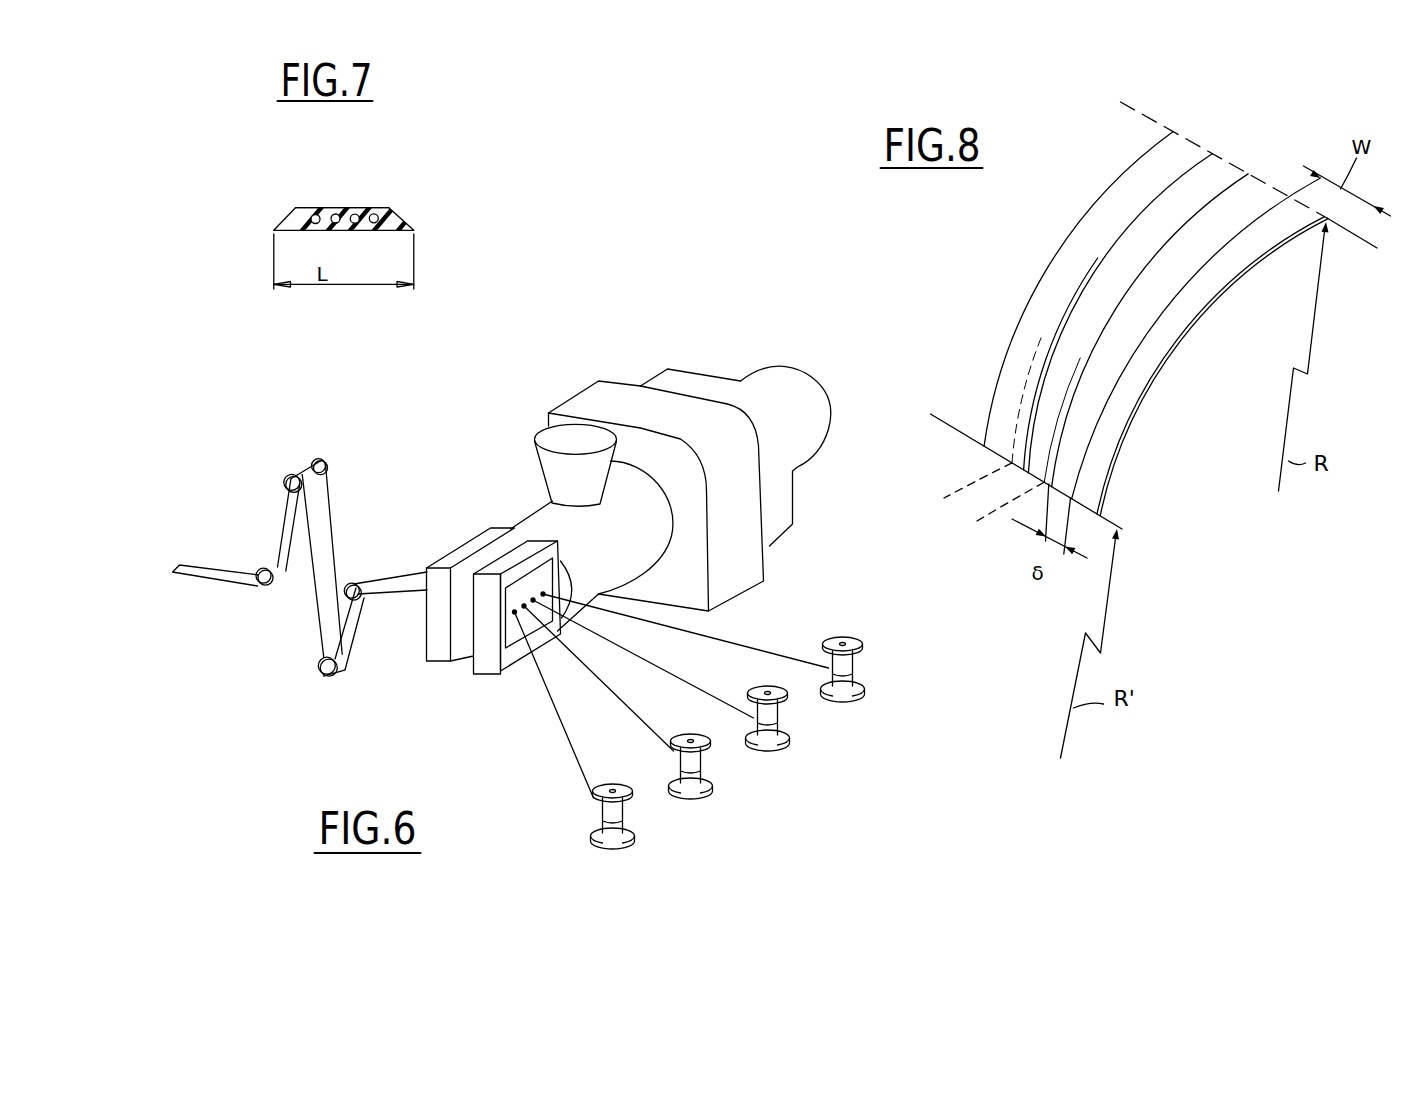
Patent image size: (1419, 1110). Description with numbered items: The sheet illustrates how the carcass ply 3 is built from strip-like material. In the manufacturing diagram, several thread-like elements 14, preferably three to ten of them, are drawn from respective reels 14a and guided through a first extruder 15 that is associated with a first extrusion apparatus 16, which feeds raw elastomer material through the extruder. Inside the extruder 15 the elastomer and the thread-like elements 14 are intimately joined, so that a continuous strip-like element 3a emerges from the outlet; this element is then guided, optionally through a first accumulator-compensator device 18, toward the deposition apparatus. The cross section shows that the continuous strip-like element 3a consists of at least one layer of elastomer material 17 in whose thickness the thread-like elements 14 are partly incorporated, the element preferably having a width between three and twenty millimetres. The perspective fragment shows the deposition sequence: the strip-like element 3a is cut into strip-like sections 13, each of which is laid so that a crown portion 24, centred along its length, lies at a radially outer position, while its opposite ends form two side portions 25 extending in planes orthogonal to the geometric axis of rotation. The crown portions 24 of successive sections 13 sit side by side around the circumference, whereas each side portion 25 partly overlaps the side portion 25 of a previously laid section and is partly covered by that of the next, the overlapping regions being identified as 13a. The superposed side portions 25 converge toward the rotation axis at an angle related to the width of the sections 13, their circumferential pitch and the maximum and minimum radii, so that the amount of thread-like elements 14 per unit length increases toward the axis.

In FIG. 8, the carcass ply 3 is at (1203, 338).
In FIG. 7, the continuous strip-like element 3a is at (329, 207).
In FIG. 6, the continuous strip-like element 3a is at (210, 560).
In FIG. 8, the strip-like sections 13 is at (1188, 140).
In FIG. 8, the overlapping regions 13a is at (979, 506).
In FIG. 7, the thread-like elements 14 is at (310, 210).
In FIG. 6, the thread-like elements 14 is at (618, 707).
In FIG. 6, the reels 14a is at (625, 843).
In FIG. 6, the first extruder 15 is at (476, 545).
In FIG. 6, the first extrusion apparatus 16 is at (625, 380).
In FIG. 7, the layer of elastomer material 17 is at (393, 212).
In FIG. 6, the first accumulator-compensator device 18 is at (346, 540).
In FIG. 8, the crown portion 24 is at (1118, 190).
In FIG. 8, the side portions 25 is at (1038, 373).